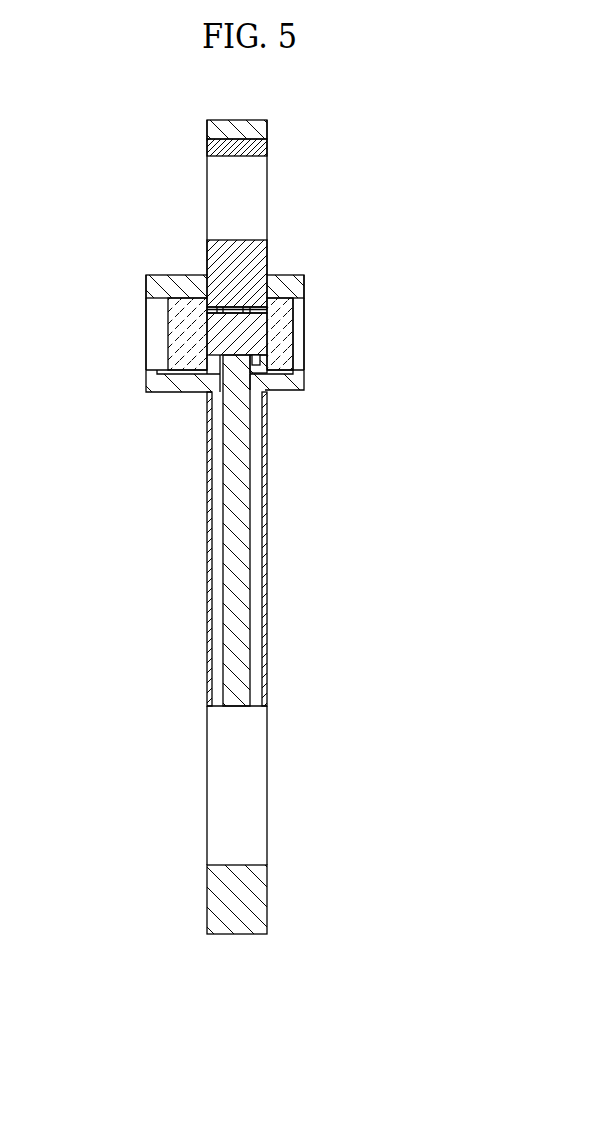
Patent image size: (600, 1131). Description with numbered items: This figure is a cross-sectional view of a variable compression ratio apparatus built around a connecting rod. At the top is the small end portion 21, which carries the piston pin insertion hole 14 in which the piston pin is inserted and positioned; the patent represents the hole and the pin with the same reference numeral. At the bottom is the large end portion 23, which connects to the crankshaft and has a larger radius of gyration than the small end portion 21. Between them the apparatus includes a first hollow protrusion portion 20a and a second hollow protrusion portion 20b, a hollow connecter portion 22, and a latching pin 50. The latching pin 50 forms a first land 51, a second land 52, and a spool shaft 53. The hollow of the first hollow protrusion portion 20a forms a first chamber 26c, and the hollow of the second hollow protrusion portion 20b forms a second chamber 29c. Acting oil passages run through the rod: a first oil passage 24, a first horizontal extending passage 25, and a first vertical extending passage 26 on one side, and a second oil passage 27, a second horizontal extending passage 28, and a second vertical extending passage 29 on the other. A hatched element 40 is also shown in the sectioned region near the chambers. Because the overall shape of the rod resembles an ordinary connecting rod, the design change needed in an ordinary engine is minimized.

The piston pin insertion hole 14 is at (256, 199).
The small end portion 21 is at (262, 133).
The hollow connecter portion 22 is at (245, 352).
The large end portion 23 is at (262, 900).
The first oil passage 24 is at (258, 503).
The first horizontal extending passage 25 is at (278, 382).
The first vertical extending passage 26 is at (300, 377).
The first chamber 26c is at (300, 330).
The second oil passage 27 is at (218, 517).
The second horizontal extending passage 28 is at (178, 383).
The second vertical extending passage 29 is at (155, 371).
The second chamber 29c is at (155, 336).
The first hollow protrusion portion 20a is at (300, 290).
The second hollow protrusion portion 20b is at (150, 286).
The hatched body 40 is at (262, 250).
The latching pin 50 is at (158, 191).
The first land 51 is at (267, 300).
The second land 52 is at (218, 270).
The spool shaft 53 is at (233, 307).